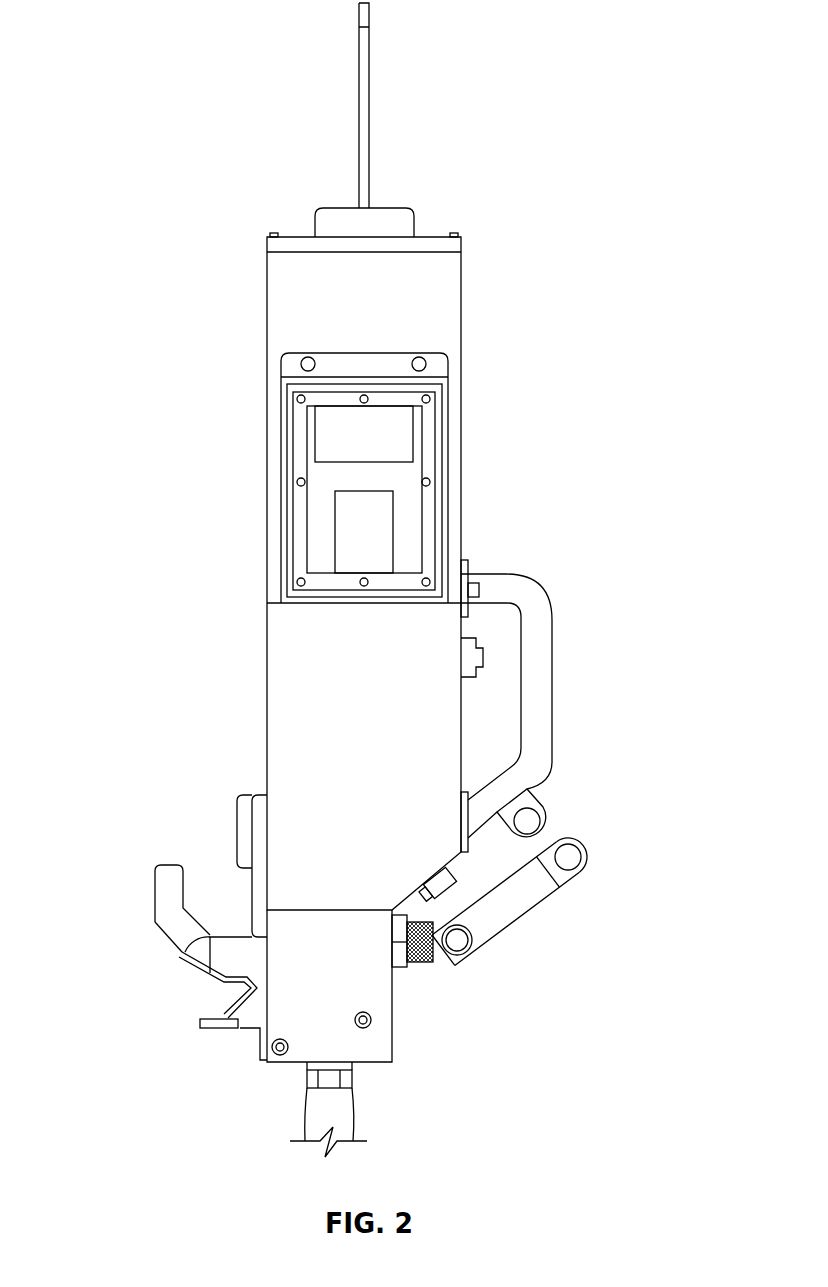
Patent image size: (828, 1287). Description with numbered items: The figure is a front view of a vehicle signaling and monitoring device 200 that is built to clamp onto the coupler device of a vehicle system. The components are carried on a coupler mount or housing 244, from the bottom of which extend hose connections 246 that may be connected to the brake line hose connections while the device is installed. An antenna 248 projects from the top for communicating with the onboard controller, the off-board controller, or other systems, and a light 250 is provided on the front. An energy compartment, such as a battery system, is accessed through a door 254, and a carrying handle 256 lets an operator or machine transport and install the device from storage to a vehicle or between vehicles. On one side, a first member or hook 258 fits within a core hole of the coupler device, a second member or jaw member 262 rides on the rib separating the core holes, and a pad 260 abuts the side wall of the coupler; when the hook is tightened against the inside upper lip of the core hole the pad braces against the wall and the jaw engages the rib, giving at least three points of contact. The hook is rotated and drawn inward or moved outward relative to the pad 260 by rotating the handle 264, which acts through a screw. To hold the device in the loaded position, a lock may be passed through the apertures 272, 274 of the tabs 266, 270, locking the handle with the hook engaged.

The vehicle signaling and monitoring device 200 is at (553, 143).
The antenna 248 is at (368, 107).
The door 254 is at (386, 757).
The light 250 is at (387, 432).
The carrying handle 256 is at (538, 707).
The tab 266 is at (527, 798).
The aperture 272 is at (528, 820).
The handle 264 is at (515, 908).
The tab 270 is at (583, 872).
The aperture 274 is at (568, 857).
The coupler mount or housing 244 is at (363, 985).
The hose connections 246 is at (338, 1115).
The pad 260 is at (237, 822).
The first member or hook 258 is at (170, 880).
The second member or jaw member 262 is at (243, 988).